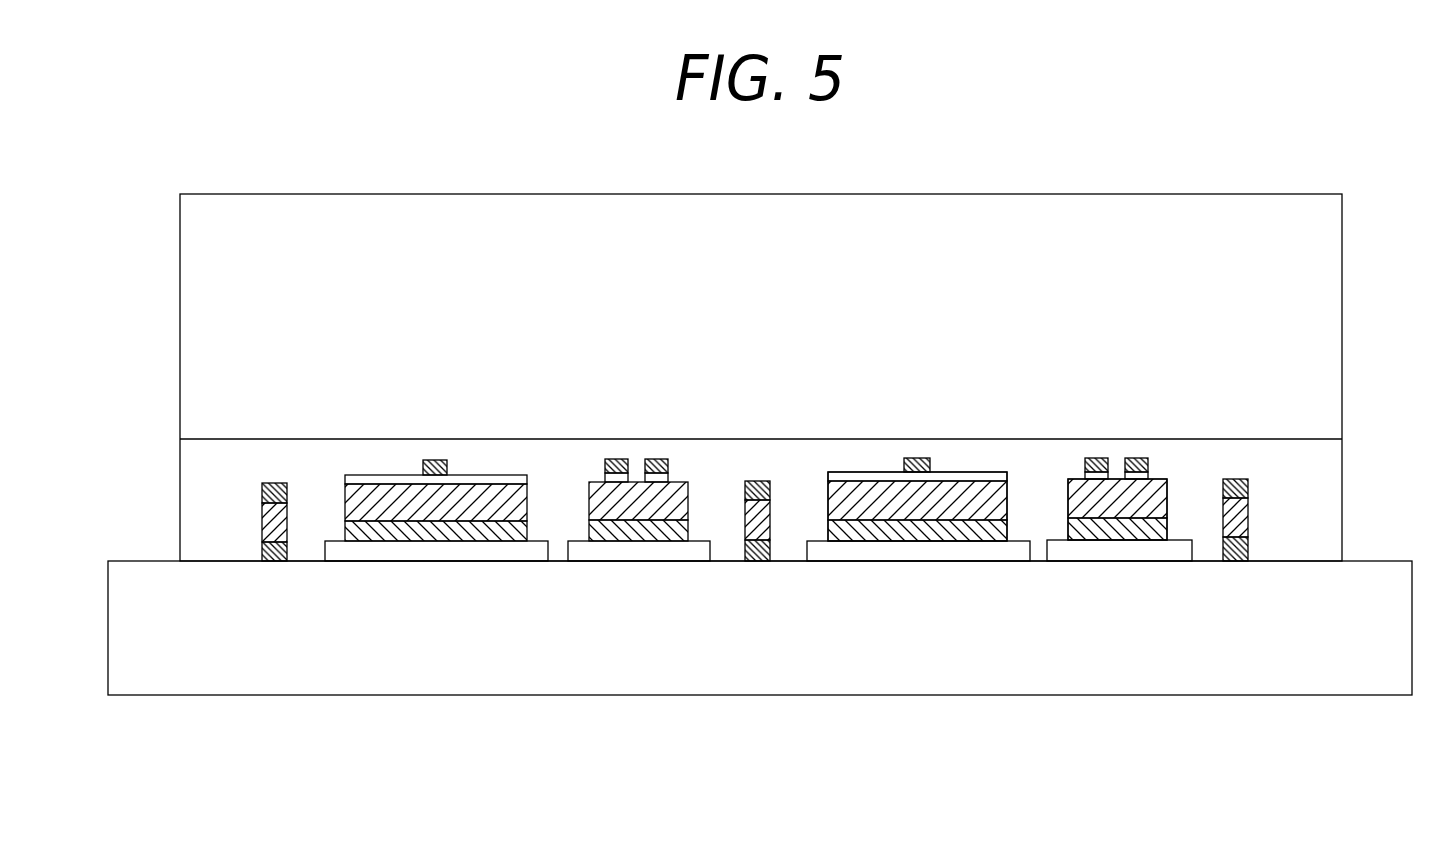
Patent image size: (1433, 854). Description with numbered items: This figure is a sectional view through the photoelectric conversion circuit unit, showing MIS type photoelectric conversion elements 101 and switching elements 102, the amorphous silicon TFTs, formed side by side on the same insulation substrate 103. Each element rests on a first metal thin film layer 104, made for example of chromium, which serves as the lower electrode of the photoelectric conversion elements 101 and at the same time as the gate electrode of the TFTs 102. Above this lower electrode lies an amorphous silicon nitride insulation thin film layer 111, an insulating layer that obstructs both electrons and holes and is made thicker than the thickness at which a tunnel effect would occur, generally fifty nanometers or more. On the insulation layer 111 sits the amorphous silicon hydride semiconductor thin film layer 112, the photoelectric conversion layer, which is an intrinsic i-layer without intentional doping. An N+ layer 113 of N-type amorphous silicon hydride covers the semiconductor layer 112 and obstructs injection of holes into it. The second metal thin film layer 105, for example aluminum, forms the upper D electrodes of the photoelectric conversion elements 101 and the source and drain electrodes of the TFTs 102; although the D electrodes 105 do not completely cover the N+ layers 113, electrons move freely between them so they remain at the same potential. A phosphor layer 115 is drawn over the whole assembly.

The photoelectric conversion element 101 is at (1030, 572).
The switching element 102 is at (1192, 572).
The insulation substrate 103 is at (1335, 680).
The first metal thin film layer 104 is at (440, 541).
The second metal thin film layer 105 is at (920, 458).
The amorphous silicon nitride insulation thin film layer 111 is at (837, 531).
The amorphous silicon hydride semiconductor thin film layer 112 is at (267, 525).
The N+ layer 113 is at (983, 480).
The phosphor layer 115 is at (205, 470).